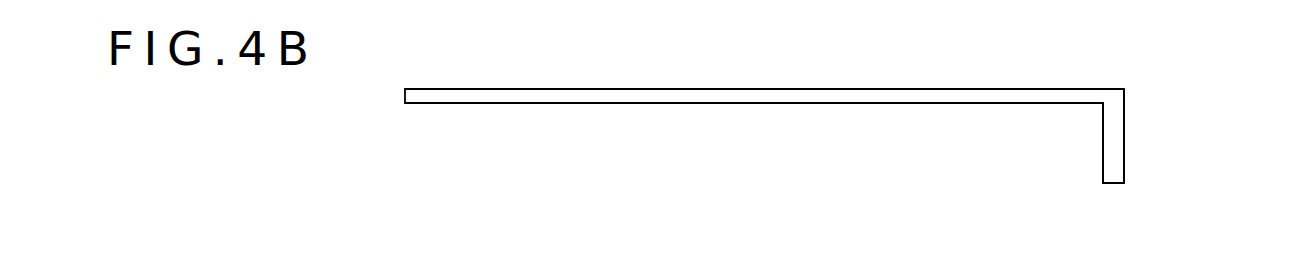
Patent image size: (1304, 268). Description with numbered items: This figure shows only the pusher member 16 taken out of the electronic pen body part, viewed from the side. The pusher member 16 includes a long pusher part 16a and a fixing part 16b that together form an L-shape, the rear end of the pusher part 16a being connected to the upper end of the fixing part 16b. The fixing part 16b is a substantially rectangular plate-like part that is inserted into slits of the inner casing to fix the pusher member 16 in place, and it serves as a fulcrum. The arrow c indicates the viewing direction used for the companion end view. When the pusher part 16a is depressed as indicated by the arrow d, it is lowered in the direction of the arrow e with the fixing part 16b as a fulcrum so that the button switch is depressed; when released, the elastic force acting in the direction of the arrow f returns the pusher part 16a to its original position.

The pusher member 16 is at (772, 121).
The pusher part 16a is at (763, 90).
The fixing part 16b is at (1124, 133).
The arrow c is at (253, 128).
The arrow d is at (608, 28).
The arrow e is at (617, 113).
The arrow f is at (580, 140).